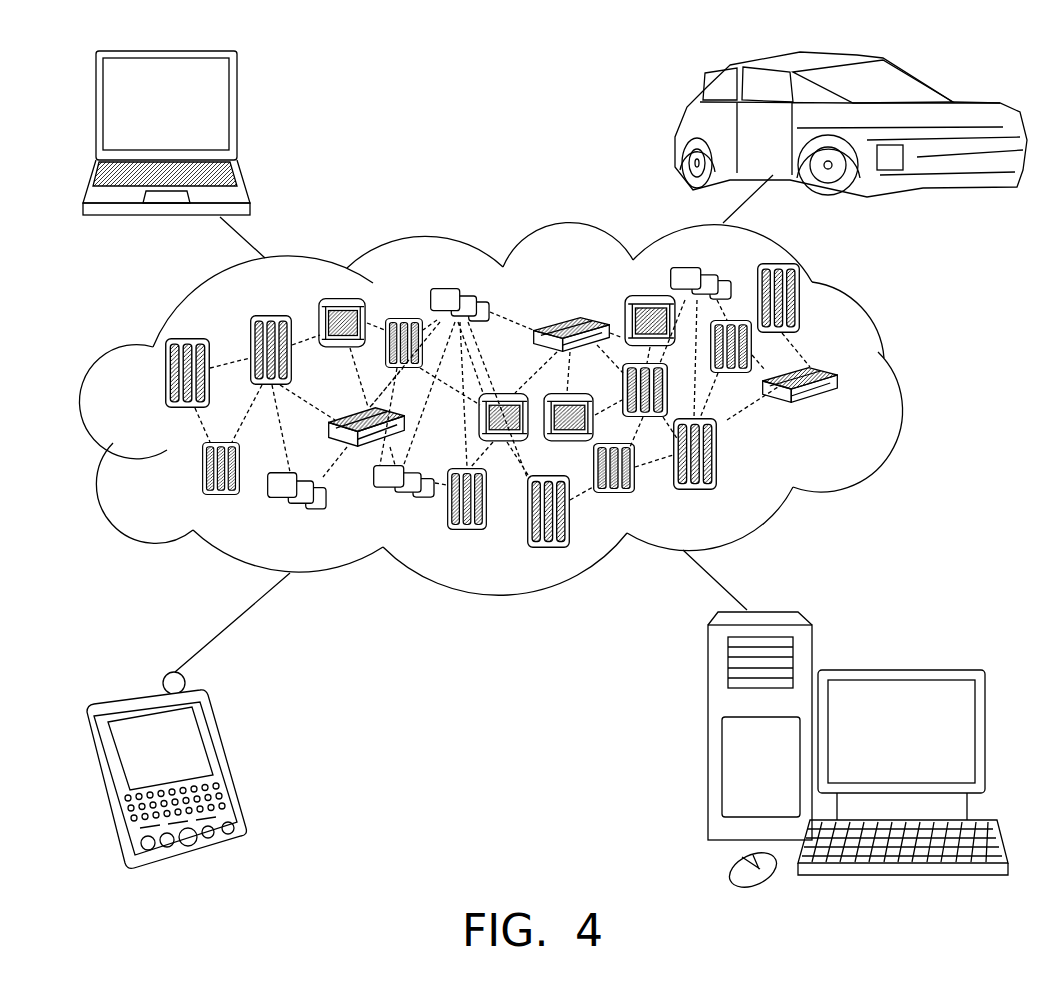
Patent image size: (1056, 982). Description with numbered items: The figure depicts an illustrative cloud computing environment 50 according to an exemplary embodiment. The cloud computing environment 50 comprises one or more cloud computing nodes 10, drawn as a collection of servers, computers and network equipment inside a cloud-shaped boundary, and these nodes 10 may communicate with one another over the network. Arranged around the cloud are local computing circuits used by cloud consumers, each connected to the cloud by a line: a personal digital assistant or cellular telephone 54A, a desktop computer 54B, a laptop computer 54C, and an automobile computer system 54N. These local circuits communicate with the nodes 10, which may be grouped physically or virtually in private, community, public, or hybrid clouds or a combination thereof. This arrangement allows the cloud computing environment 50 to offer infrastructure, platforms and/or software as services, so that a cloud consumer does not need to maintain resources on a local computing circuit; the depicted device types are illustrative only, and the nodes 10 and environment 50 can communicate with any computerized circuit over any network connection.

The cloud computing node 10 is at (841, 412).
The cloud computing environment 50 is at (902, 387).
The personal digital assistant or cellular telephone 54A is at (227, 758).
The desktop computer 54B is at (898, 668).
The laptop computer 54C is at (237, 113).
The automobile computer system 54N is at (680, 128).